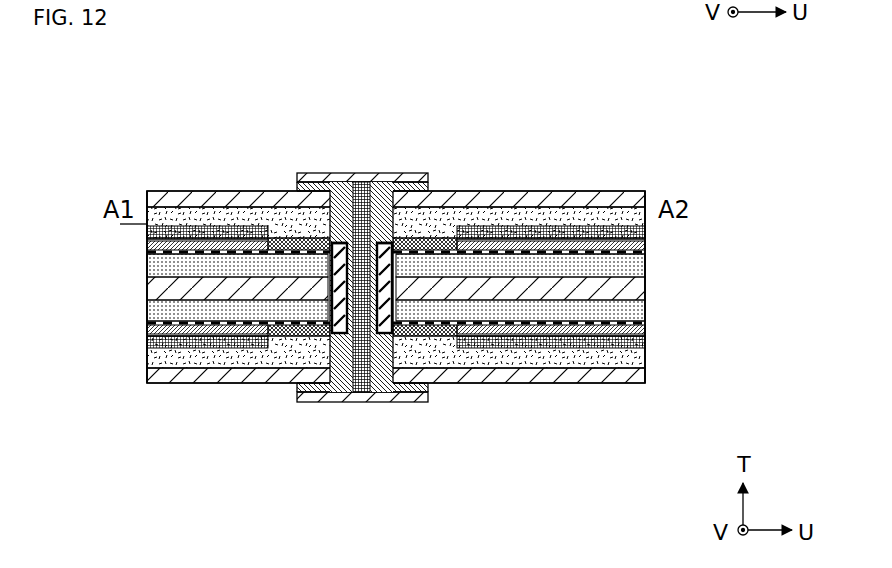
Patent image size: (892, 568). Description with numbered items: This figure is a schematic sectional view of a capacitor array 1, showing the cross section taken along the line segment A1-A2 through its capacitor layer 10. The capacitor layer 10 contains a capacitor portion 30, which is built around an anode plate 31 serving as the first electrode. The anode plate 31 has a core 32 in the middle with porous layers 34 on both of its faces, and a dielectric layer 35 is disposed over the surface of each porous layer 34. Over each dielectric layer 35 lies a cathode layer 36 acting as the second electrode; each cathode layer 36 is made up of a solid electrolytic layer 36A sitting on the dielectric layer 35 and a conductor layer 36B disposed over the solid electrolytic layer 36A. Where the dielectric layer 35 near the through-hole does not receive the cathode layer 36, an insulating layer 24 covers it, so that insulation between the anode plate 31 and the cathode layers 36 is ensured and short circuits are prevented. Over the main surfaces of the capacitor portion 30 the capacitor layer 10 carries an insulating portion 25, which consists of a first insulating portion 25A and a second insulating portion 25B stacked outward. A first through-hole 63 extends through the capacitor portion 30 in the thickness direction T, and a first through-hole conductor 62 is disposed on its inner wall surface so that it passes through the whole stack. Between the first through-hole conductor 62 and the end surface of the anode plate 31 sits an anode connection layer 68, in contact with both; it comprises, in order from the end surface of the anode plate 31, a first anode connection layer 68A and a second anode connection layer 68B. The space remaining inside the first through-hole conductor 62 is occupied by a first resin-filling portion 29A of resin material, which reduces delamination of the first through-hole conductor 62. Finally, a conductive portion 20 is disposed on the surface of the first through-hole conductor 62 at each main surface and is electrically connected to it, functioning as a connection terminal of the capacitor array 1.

The capacitor array 1 is at (715, 143).
The capacitor layer 10 is at (100, 190).
The conductive portion 20 is at (410, 177).
The insulating layer 24 is at (290, 246).
The insulating portion 25 is at (557, 127).
The first insulating portion 25A is at (558, 217).
The second insulating portion 25B is at (627, 196).
The first resin-filling portion 29A is at (360, 197).
The capacitor portion 30 is at (797, 225).
The anode plate 31 is at (753, 288).
The core 32 is at (638, 285).
The porous layer 34 is at (637, 270).
The dielectric layer 35 is at (638, 255).
The cathode layer 36 is at (753, 217).
The solid electrolytic layer 36A is at (638, 247).
The conductor layer 36B is at (637, 233).
The first through-hole conductor 62 is at (342, 198).
The first through-hole 63 is at (298, 191).
The anode connection layer 68 is at (335, 462).
The first anode connection layer 68A is at (385, 336).
The second anode connection layer 68B is at (341, 336).